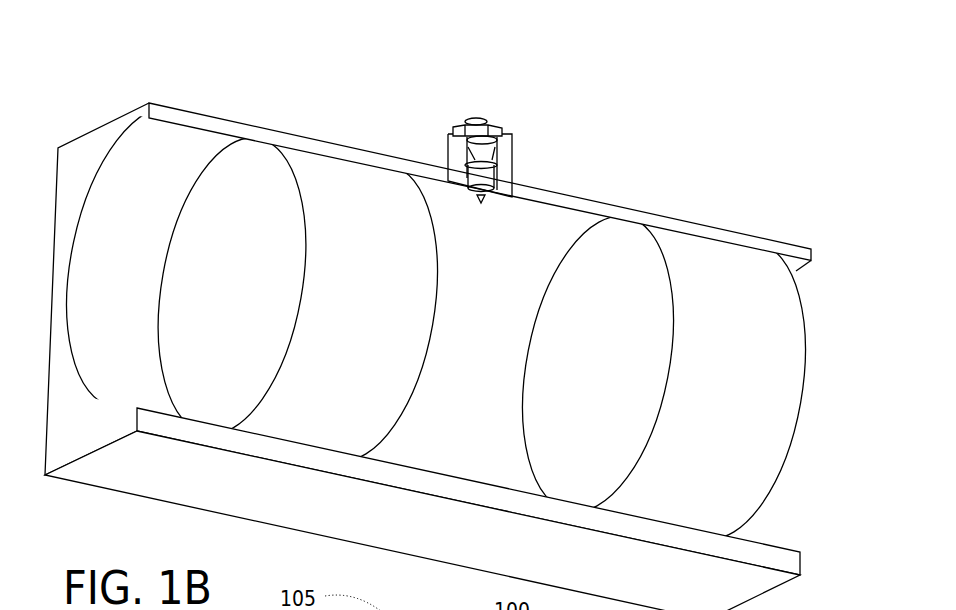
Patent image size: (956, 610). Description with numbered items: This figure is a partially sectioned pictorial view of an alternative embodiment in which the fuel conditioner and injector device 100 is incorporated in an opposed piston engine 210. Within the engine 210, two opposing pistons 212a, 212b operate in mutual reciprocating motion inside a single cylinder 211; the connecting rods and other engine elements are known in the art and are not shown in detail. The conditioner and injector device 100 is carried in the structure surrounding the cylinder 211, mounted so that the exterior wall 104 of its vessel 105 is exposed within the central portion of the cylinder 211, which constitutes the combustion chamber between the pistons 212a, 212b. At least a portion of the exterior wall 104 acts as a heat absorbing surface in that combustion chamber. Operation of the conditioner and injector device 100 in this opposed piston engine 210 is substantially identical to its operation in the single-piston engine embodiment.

The fuel conditioner and injector device 100 is at (520, 147).
The exterior wall 104 is at (479, 203).
The vessel 105 is at (481, 117).
The opposed piston engine 210 is at (457, 313).
The cylinder 211 is at (197, 111).
The opposing piston 212a is at (235, 288).
The opposing piston 212b is at (768, 365).